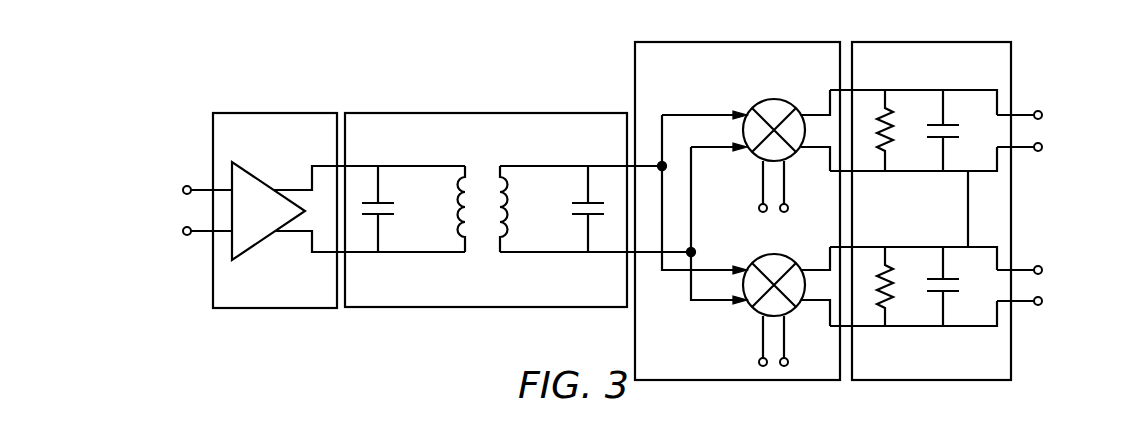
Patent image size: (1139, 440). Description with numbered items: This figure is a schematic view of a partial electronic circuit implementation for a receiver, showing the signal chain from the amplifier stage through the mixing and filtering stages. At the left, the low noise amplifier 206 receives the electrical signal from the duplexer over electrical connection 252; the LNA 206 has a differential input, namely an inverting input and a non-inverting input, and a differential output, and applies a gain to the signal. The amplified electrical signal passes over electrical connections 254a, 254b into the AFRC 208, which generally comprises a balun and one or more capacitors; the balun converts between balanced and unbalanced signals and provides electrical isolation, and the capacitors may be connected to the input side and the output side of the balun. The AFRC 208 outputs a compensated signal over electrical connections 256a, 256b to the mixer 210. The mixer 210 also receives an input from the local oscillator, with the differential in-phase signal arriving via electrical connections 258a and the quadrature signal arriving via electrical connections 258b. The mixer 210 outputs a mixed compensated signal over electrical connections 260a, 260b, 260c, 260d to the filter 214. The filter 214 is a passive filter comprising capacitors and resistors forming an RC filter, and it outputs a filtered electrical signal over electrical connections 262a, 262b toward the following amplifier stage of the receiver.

The low noise amplifier 206 is at (277, 113).
The AFRC 208 is at (431, 113).
The mixer 210 is at (748, 42).
The filter 214 is at (929, 42).
The electrical connection 252 is at (183, 190).
The electrical connection 254a is at (368, 166).
The electrical connection 254b is at (359, 253).
The electrical connection 256a is at (608, 166).
The electrical connection 256b is at (608, 253).
The electrical connection 258a is at (784, 215).
The electrical connection 258b is at (785, 367).
The electrical connection 260a is at (849, 96).
The electrical connection 260b is at (846, 172).
The electrical connection 260c is at (846, 247).
The electrical connection 260d is at (848, 327).
The electrical connection 262a is at (1043, 115).
The electrical connection 262b is at (1043, 270).